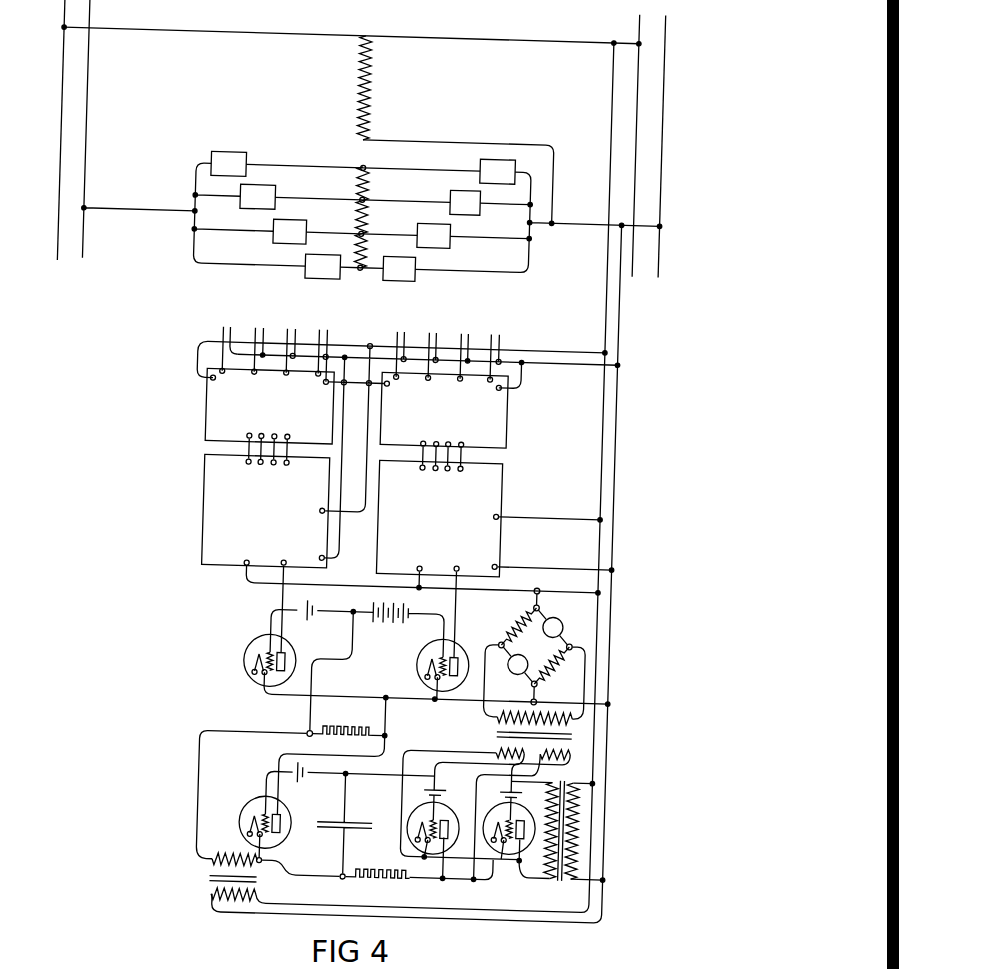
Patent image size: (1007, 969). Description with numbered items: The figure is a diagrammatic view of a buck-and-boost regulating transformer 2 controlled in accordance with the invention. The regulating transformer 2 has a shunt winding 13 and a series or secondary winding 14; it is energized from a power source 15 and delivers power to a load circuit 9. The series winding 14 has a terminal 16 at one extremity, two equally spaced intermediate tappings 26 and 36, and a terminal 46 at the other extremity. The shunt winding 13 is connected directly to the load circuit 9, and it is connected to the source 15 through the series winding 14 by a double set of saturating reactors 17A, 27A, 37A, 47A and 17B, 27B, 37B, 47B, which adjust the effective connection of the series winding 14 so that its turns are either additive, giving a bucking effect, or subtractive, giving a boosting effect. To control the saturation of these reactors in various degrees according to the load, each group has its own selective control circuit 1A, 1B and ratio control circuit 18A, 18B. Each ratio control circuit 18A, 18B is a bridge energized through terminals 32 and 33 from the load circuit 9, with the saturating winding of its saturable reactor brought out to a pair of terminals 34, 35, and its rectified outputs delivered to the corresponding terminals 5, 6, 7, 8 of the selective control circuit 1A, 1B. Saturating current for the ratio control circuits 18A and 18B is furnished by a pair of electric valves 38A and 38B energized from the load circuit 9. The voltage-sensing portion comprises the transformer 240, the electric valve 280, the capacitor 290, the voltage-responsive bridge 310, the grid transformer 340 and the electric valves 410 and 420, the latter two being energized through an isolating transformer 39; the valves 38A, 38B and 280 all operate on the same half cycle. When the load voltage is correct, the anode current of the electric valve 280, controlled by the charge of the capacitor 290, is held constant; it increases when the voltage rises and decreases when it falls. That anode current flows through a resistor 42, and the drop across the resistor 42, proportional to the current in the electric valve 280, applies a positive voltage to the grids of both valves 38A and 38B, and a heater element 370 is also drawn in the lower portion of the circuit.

The power source 15 is at (46, 130).
The regulating transformer 2 is at (360, 27).
The load circuit 9 is at (671, 147).
The shunt winding 13 is at (352, 87).
The series winding 14 is at (344, 206).
The terminal 16 is at (358, 169).
The intermediate tapping 26 is at (358, 203).
The intermediate tapping 36 is at (358, 236).
The terminal 46 is at (356, 275).
The saturating reactor 17A is at (229, 163).
The saturating reactor 27A is at (258, 196).
The saturating reactor 37A is at (290, 231).
The saturating reactor 47A is at (323, 266).
The saturating reactor 17B is at (498, 171).
The saturating reactor 27B is at (465, 202).
The saturating reactor 37B is at (434, 235).
The saturating reactor 47B is at (399, 268).
The selective control circuit 1A is at (205, 412).
The selective control circuit 1B is at (525, 411).
The terminal 5 is at (247, 437).
The terminal 6 is at (261, 437).
The terminal 7 is at (275, 437).
The terminal 8 is at (289, 437).
The ratio control circuit 18A is at (205, 516).
The ratio control circuit 18B is at (521, 499).
The terminal 32 is at (448, 514).
The terminal 33 is at (453, 565).
The terminal 34 is at (419, 567).
The terminal 35 is at (370, 598).
The electric valve 38A is at (294, 643).
The electric valve 38B is at (420, 647).
The voltage-responsive bridge 310 is at (530, 653).
The resistor 42 is at (350, 722).
The grid transformer 340 is at (517, 735).
The electric valve 280 is at (330, 811).
The capacitor 290 is at (339, 823).
The transformer 240 is at (235, 869).
The heater 370 is at (377, 888).
The electric valve 410 is at (464, 828).
The electric valve 420 is at (525, 830).
The isolating transformer 39 is at (558, 843).